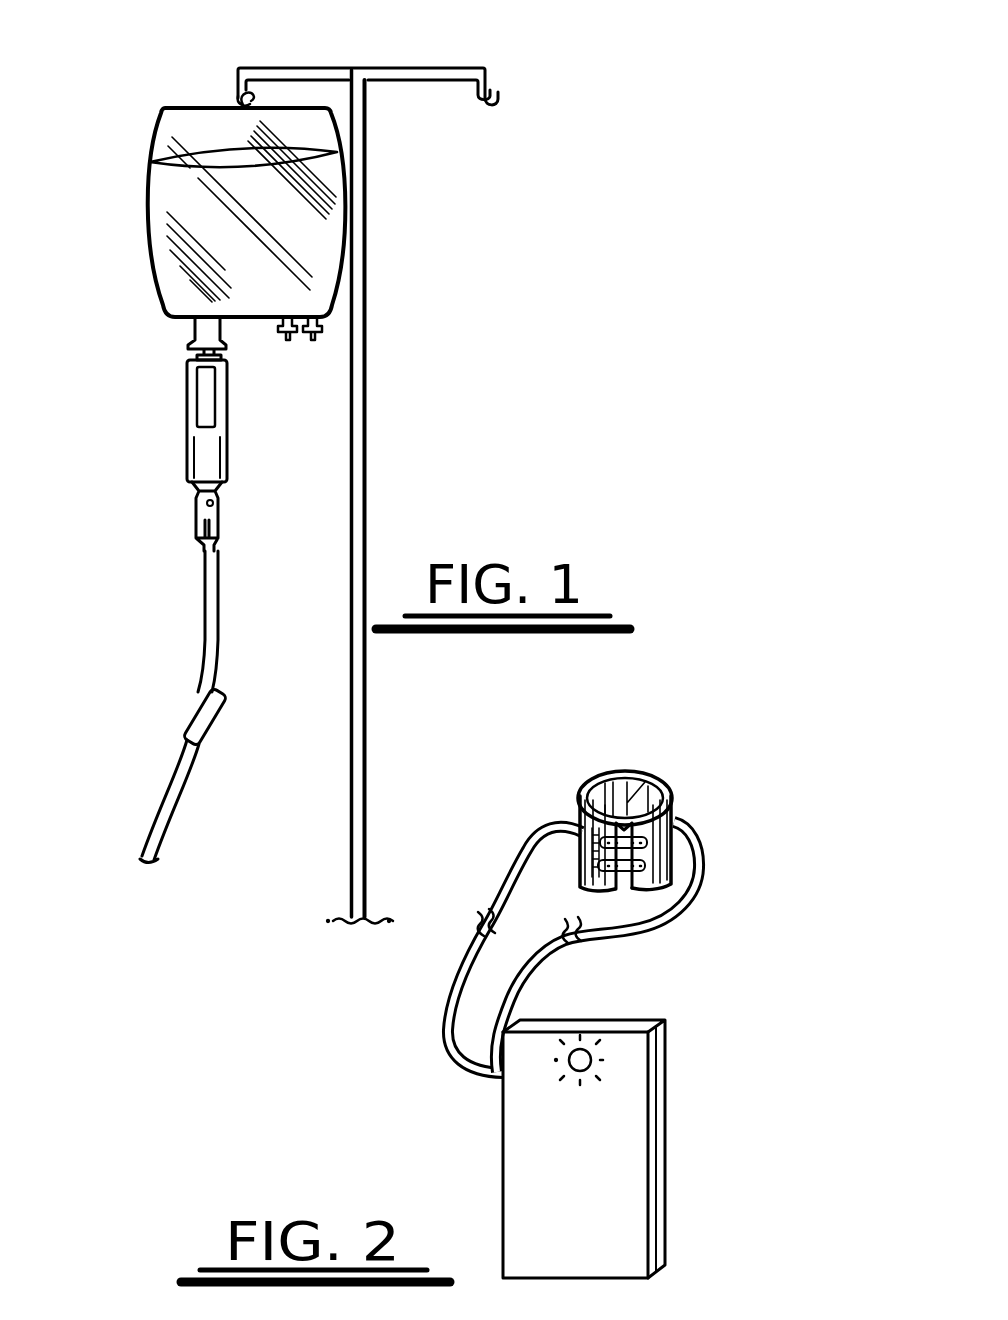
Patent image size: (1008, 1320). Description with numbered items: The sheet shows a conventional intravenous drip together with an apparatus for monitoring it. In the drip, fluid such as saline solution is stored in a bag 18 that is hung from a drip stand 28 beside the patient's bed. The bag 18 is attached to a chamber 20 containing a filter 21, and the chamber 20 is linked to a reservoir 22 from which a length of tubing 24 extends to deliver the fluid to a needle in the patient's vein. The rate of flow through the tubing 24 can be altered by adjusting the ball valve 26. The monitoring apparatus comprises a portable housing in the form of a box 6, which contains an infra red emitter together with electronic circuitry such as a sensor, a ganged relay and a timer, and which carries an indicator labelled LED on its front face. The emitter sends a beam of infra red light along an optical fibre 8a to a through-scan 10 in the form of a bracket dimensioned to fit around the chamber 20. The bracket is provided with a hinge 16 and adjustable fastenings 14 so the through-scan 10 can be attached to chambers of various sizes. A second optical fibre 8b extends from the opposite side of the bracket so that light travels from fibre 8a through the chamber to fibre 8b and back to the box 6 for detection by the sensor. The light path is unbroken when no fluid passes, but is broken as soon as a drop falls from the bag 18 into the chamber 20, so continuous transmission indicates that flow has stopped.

In FIG. 2, the box 6 is at (660, 1149).
In FIG. 2, the optical fibre 8a is at (530, 847).
In FIG. 2, the second optical fibre 8b is at (662, 882).
In FIG. 2, the through-scan 10 is at (678, 822).
In FIG. 2, the adjustable fastenings 14 is at (653, 878).
In FIG. 2, the hinge 16 is at (648, 792).
In FIG. 1, the bag 18 is at (343, 208).
In FIG. 1, the chamber 20 is at (144, 418).
In FIG. 1, the filter 21 is at (205, 412).
In FIG. 1, the reservoir 22 is at (207, 513).
In FIG. 1, the tubing 24 is at (215, 721).
In FIG. 1, the ball valve 26 is at (219, 713).
In FIG. 1, the drip stand 28 is at (355, 402).
In FIG. 2, the light emitting diode indicator LED is at (620, 1050).